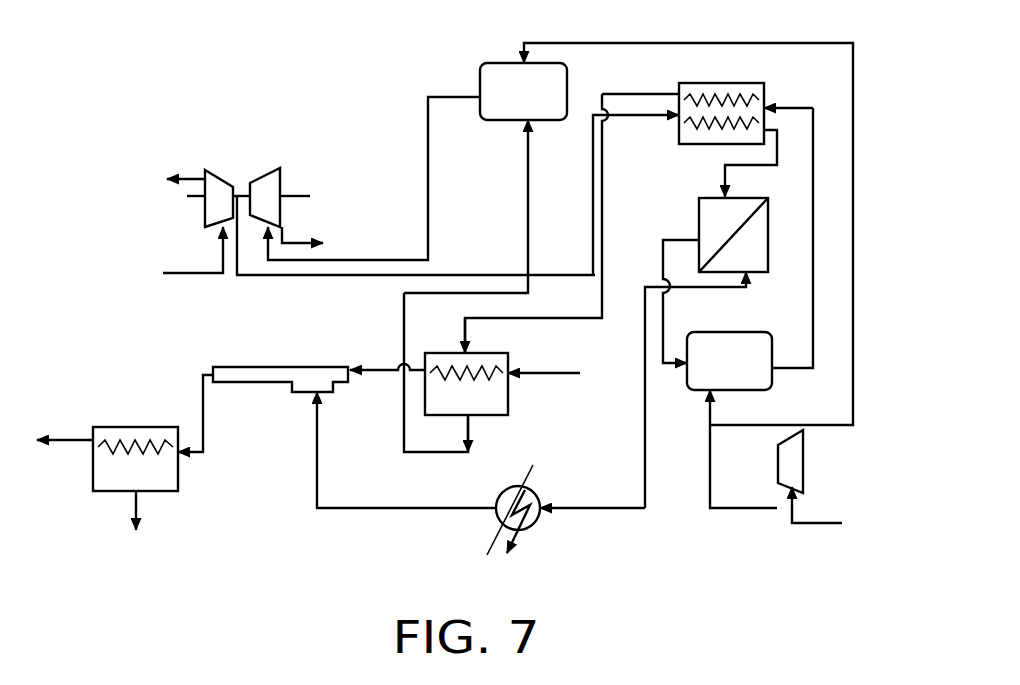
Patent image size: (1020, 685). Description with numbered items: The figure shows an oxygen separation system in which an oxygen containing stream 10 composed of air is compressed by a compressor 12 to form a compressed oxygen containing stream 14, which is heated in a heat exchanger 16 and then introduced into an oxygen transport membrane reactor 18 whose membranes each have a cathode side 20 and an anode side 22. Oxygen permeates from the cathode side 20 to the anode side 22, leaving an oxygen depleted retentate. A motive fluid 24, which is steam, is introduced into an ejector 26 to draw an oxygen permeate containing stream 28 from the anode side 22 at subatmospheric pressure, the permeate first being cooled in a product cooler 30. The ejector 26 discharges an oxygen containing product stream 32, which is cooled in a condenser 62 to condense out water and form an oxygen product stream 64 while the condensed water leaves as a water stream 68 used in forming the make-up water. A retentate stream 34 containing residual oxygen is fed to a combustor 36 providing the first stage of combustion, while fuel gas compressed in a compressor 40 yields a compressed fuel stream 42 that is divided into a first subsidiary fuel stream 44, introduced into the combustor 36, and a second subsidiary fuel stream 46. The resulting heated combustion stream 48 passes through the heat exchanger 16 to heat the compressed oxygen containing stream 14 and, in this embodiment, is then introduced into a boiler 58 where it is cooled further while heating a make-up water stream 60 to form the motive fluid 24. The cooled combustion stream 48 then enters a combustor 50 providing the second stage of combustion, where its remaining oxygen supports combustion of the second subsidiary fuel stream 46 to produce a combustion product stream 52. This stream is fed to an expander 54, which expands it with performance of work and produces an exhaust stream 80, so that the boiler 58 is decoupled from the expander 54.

The oxygen containing stream 10 is at (197, 274).
The compressor 12 is at (221, 187).
The compressed oxygen containing stream 14 is at (297, 276).
The heat exchanger 16 is at (735, 83).
The oxygen transport membrane reactor 18 is at (699, 210).
The cathode side 20 is at (710, 205).
The anode side 22 is at (765, 238).
The motive fluid 24 is at (383, 367).
The ejector 26 is at (265, 378).
The oxygen permeate containing stream 28 is at (648, 468).
The product cooler 30 is at (502, 522).
The oxygen containing product stream 32 is at (203, 393).
The retentate stream 34 is at (662, 260).
The combustor 36 is at (730, 342).
The compressor 40 is at (797, 463).
The compressed fuel stream 42 is at (728, 510).
The first subsidiary fuel stream 44 is at (710, 420).
The second subsidiary fuel stream 46 is at (853, 376).
The heated combustion stream 48 is at (526, 203).
The combustor 50 is at (497, 78).
The combustion product stream 52 is at (426, 172).
The expander 54 is at (267, 185).
The boiler 58 is at (490, 407).
The make-up water stream 60 is at (560, 374).
The condenser 62 is at (105, 468).
The oxygen product stream 64 is at (70, 438).
The water stream 68 is at (138, 497).
The exhaust stream 80 is at (293, 239).